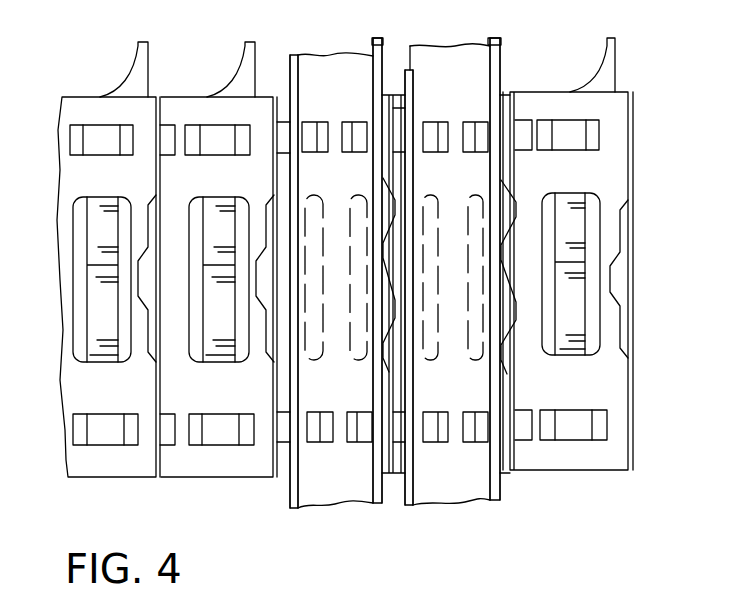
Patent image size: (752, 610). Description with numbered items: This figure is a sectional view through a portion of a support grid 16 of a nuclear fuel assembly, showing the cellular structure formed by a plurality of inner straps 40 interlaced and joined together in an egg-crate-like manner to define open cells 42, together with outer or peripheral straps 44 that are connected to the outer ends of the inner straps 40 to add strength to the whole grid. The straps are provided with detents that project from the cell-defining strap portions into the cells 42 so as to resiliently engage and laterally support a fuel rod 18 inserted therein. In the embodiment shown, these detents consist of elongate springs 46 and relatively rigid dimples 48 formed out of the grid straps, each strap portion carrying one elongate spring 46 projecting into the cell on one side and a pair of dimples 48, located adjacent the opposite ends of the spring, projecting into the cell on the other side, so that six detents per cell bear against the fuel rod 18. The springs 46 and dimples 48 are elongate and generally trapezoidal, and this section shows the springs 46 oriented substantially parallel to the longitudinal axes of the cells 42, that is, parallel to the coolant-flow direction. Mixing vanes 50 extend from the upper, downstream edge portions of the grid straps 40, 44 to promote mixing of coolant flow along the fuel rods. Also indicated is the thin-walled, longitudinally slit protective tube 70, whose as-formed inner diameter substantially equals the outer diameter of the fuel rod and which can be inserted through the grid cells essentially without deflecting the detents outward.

The support grid 16 is at (597, 239).
The fuel rod 18 is at (420, 259).
The inner strap 40 is at (270, 476).
The cell 42 is at (218, 115).
The outer strap 44 is at (635, 366).
The elongate spring 46 is at (567, 322).
The dimple 48 is at (593, 133).
The mixing vane 50 is at (598, 60).
The tube 70 is at (500, 82).